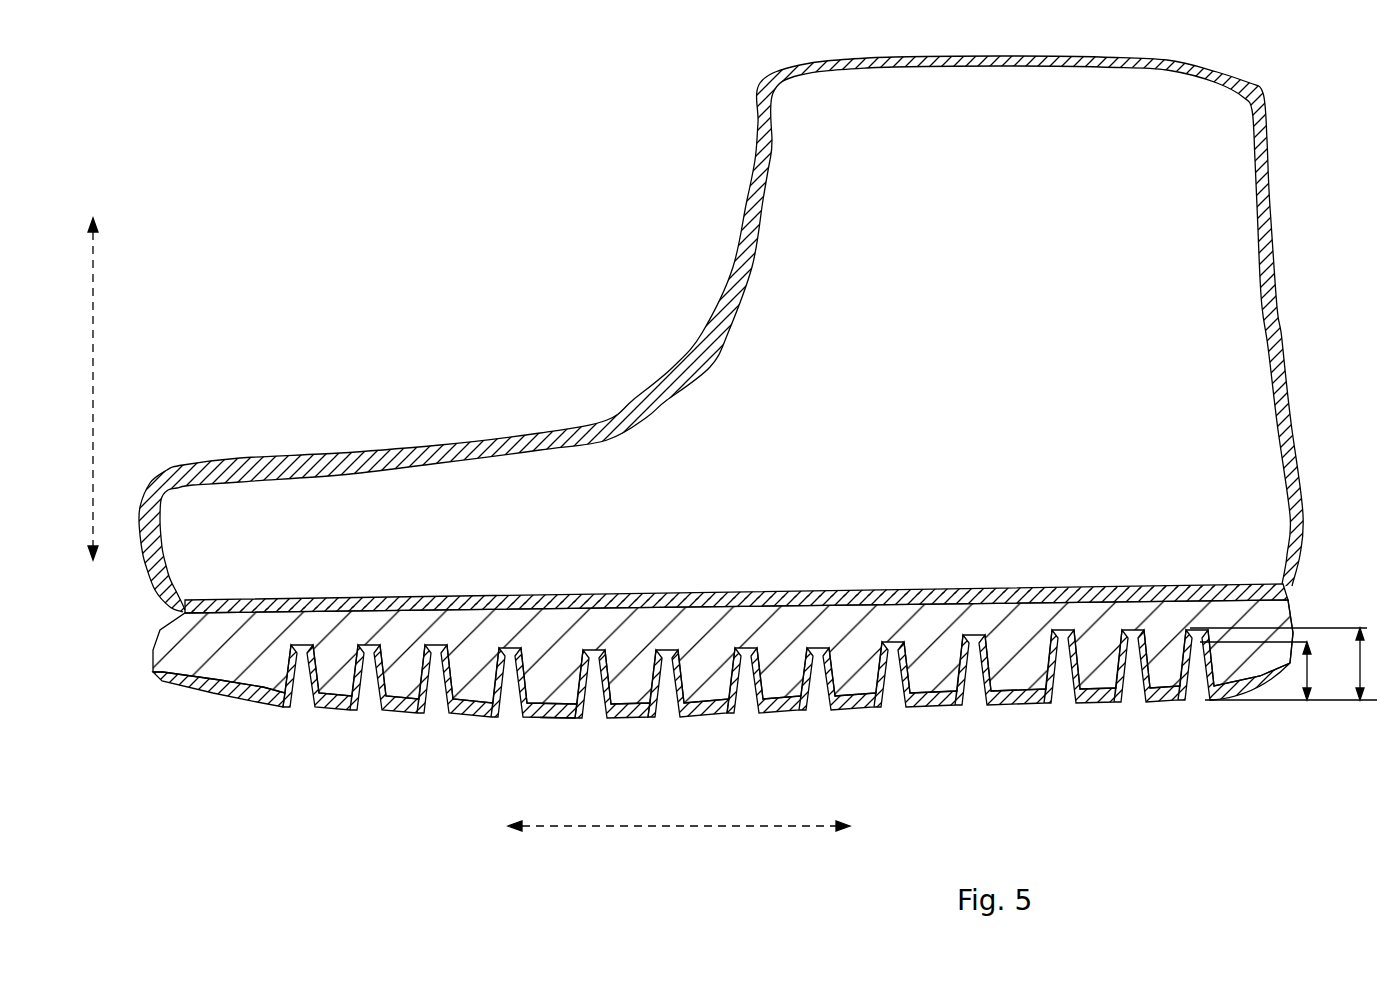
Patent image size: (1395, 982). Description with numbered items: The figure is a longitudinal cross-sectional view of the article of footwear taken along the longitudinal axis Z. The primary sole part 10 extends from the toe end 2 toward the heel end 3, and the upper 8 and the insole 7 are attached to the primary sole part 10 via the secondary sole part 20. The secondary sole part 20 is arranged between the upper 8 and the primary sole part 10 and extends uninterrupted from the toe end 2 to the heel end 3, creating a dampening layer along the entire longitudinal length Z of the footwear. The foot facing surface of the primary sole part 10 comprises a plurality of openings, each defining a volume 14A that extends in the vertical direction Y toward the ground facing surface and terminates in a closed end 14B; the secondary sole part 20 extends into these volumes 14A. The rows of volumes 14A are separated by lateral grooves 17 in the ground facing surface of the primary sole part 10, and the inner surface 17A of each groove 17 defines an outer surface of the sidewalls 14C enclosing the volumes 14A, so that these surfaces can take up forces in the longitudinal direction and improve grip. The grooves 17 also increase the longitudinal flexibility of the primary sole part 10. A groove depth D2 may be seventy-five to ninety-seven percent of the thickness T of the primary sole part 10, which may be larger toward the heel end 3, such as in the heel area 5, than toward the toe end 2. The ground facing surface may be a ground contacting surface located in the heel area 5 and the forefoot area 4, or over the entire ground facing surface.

The toe end 2 is at (729, 688).
The heel end 3 is at (1318, 590).
The forefoot area 4 is at (721, 733).
The heel area 5 is at (1118, 767).
The insole 7 is at (837, 591).
The upper 8 is at (655, 403).
The primary sole part 10 is at (698, 710).
The volume 14A is at (632, 678).
The closed end 14B is at (558, 700).
The sidewall 14C is at (583, 652).
The lateral groove 17 is at (818, 710).
The inner surface 17A is at (513, 706).
The secondary sole part 20 is at (732, 646).
The vertical direction Y is at (92, 428).
The longitudinal axis Z is at (718, 827).
The depth of the grooves D2 is at (1288, 671).
The thickness of the primary sole part T is at (1288, 664).